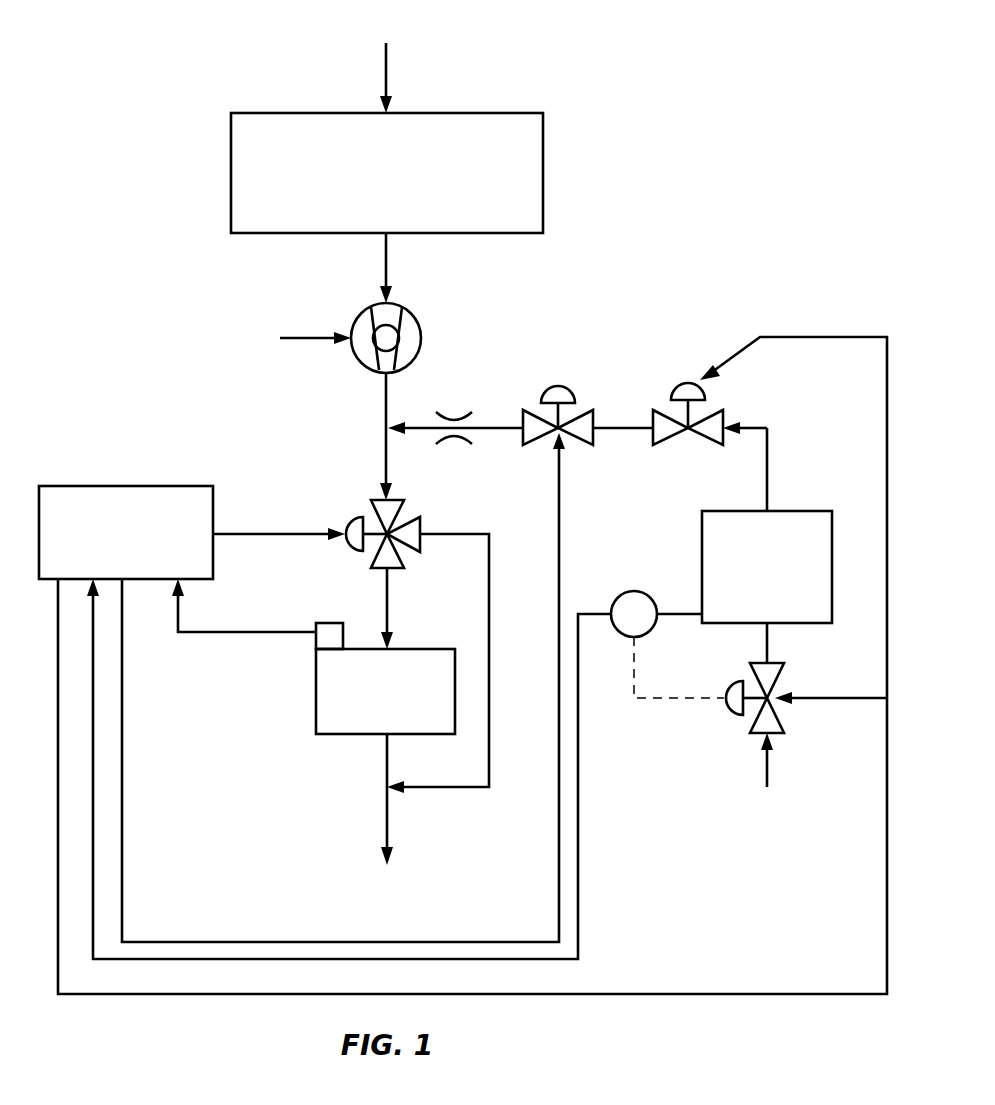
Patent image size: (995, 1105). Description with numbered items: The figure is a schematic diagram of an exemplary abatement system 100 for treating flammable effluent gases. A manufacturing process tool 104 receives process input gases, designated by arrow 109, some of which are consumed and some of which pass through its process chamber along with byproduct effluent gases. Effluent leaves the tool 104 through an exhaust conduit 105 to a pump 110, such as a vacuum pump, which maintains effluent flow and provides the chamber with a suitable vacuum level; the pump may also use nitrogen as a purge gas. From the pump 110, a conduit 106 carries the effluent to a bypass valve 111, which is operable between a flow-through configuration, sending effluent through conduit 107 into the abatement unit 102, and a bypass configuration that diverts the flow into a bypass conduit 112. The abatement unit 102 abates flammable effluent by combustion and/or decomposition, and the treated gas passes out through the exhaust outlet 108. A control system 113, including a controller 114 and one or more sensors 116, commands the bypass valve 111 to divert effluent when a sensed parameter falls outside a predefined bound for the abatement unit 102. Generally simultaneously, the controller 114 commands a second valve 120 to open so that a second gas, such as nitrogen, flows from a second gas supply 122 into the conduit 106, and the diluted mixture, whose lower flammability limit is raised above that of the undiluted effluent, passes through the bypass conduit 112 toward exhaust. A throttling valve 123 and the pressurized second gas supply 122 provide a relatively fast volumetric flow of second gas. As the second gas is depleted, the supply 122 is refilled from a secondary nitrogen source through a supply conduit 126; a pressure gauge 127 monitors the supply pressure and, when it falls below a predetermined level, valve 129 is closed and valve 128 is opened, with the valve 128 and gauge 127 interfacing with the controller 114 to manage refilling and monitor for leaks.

The abatement system 100 is at (650, 258).
The abatement unit 102 is at (316, 737).
The manufacturing process tool 104 is at (543, 180).
The exhaust conduit 105 is at (387, 258).
The exhaust conduit 106 is at (385, 394).
The exhaust conduit 107 is at (388, 615).
The exhaust outlet 108 is at (387, 822).
The process input gases 109 is at (386, 60).
The pump 110 is at (423, 343).
The bypass valve 111 is at (373, 497).
The bypass conduit 112 is at (455, 533).
The control system 113 is at (222, 437).
The controller 114 is at (143, 486).
The sensor 116 is at (331, 622).
The second valve 120 is at (560, 385).
The second gas supply 122 is at (702, 511).
The throttling valve 123 is at (455, 418).
The supply conduit 126 is at (768, 640).
The pressure gauge 127 is at (641, 591).
The valve 128 is at (768, 718).
The valve 129 is at (684, 385).